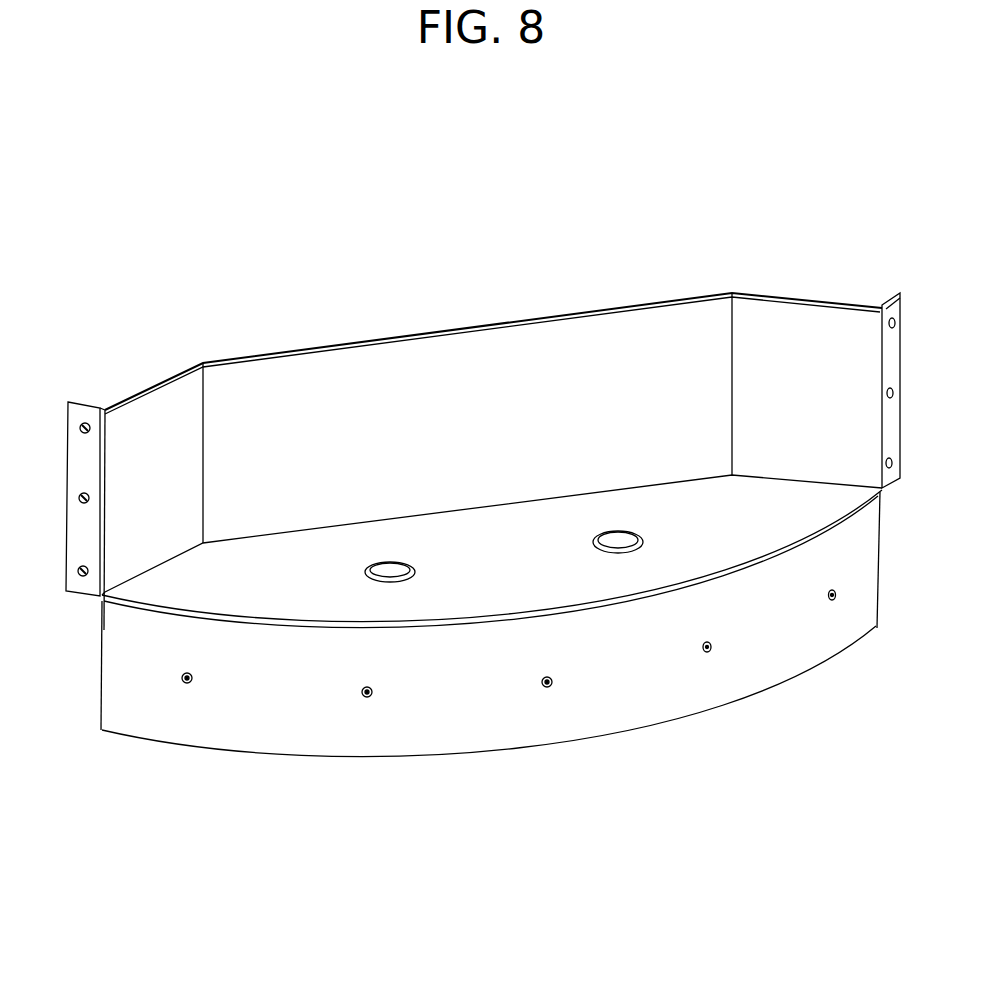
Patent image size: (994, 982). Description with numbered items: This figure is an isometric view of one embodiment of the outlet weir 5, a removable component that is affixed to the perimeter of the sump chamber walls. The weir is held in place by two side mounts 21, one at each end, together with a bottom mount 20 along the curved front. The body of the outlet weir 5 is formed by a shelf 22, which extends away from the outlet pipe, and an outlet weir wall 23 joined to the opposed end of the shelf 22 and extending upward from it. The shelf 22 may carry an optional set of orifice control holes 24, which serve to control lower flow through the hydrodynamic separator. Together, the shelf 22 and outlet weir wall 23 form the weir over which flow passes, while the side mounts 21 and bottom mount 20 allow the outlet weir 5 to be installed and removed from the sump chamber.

The outlet weir 5 is at (890, 760).
The bottom mount 20 is at (652, 680).
The side mount 21 is at (80, 405).
The shelf 22 is at (302, 575).
The outlet weir wall 23 is at (488, 365).
The orifice control hole 24 is at (615, 520).